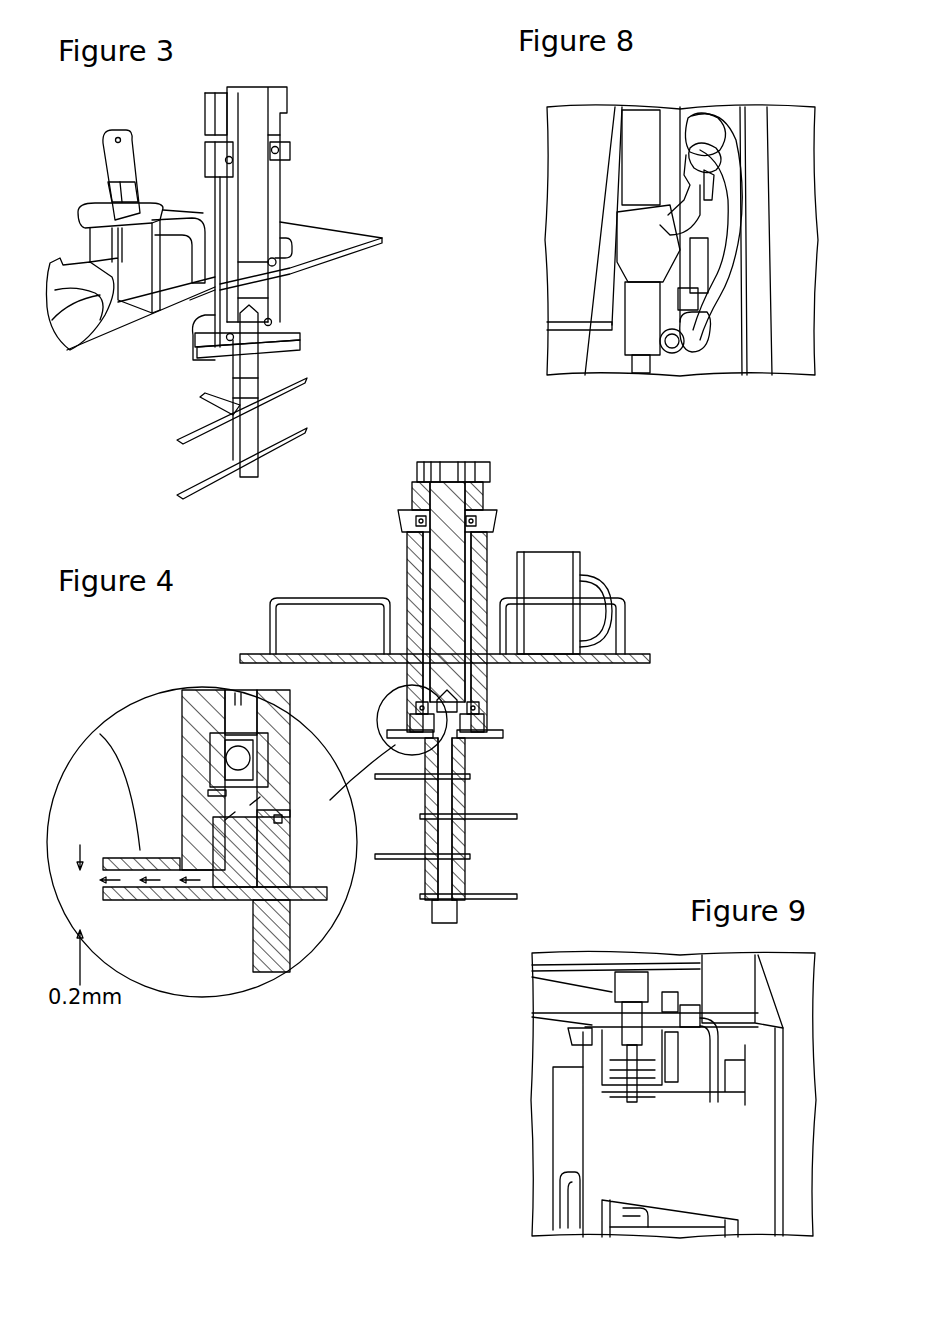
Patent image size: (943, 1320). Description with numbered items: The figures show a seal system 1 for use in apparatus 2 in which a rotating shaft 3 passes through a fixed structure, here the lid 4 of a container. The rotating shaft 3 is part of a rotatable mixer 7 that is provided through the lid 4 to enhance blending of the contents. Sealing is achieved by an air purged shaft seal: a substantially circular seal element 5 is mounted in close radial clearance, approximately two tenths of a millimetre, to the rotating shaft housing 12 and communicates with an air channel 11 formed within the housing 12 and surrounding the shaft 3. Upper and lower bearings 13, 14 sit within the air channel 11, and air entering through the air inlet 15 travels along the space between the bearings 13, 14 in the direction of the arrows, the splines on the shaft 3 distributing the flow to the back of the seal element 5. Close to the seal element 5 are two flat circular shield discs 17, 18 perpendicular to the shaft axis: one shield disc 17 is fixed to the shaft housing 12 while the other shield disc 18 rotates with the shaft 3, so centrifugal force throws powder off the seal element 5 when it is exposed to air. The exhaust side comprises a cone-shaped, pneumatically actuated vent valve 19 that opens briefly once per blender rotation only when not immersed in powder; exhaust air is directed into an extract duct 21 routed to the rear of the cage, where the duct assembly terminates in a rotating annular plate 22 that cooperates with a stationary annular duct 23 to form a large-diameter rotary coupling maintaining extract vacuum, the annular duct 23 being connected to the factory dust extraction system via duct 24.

In FIG. 3, the seal system 1 is at (360, 66).
In FIG. 3, the apparatus 2 is at (422, 360).
In FIG. 3, the rotating shaft 3 is at (262, 180).
In FIG. 4, the rotating shaft 3 is at (455, 655).
In FIG. 3, the lid 4 is at (348, 230).
In FIG. 3, the seal element 5 is at (270, 347).
In FIG. 4, the seal element 5 is at (250, 887).
In FIG. 3, the mixer 7 is at (245, 447).
In FIG. 4, the mixer 7 is at (470, 867).
In FIG. 3, the air channel 11 is at (278, 298).
In FIG. 4, the air channel 11 is at (465, 700).
In FIG. 3, the rotating shaft housing 12 is at (270, 268).
In FIG. 3, the upper bearing 13 is at (282, 132).
In FIG. 4, the upper bearing 13 is at (480, 510).
In FIG. 3, the lower bearing 14 is at (282, 326).
In FIG. 4, the lower bearing 14 is at (228, 762).
In FIG. 3, the air inlet 15 is at (289, 240).
In FIG. 3, the shield disc 17 is at (302, 340).
In FIG. 4, the shield disc 17 is at (150, 870).
In FIG. 3, the shield disc 18 is at (302, 350).
In FIG. 4, the shield disc 18 is at (140, 893).
In FIG. 3, the vent valve 19 is at (128, 330).
In FIG. 8, the vent valve 19 is at (705, 95).
In FIG. 9, the vent valve 19 is at (668, 1022).
In FIG. 3, the extract duct 21 is at (80, 330).
In FIG. 8, the annular plate 22 is at (710, 197).
In FIG. 8, the annular duct 23 is at (722, 300).
In FIG. 9, the duct 24 is at (560, 1218).